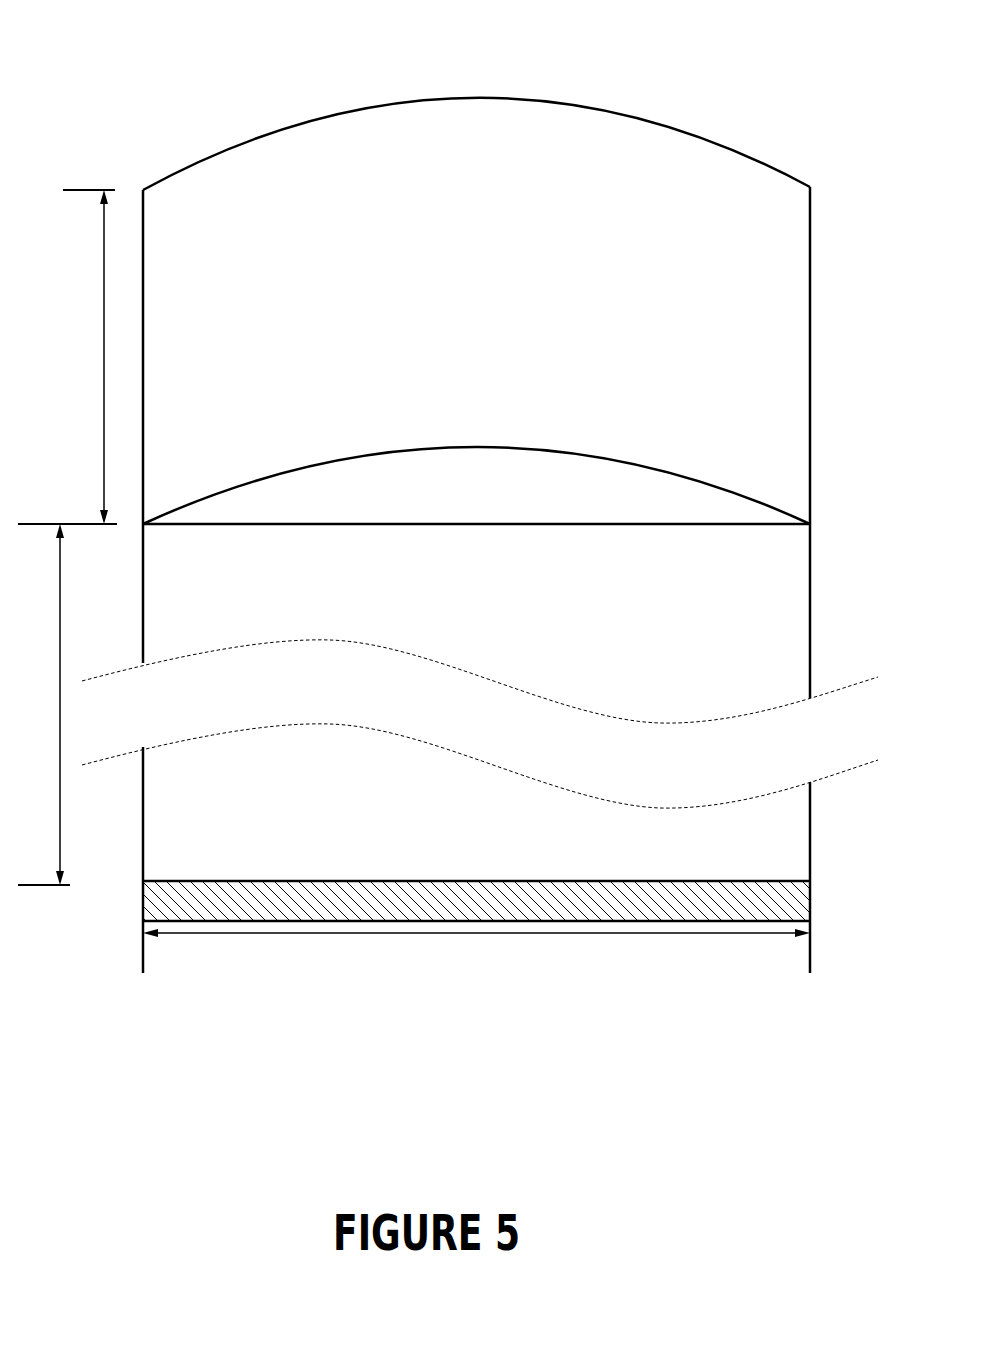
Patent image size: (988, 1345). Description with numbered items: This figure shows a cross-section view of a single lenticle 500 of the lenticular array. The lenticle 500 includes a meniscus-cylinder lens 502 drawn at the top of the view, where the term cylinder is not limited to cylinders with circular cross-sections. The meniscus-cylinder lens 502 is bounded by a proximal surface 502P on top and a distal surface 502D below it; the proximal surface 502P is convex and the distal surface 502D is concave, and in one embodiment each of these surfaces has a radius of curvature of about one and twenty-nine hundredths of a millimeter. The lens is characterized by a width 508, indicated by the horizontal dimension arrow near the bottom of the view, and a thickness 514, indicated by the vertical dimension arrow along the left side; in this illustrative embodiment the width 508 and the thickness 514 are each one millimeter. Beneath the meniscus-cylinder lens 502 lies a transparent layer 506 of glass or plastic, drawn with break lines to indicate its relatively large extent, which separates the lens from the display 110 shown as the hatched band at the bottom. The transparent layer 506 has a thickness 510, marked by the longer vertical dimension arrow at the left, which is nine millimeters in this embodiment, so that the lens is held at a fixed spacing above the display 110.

The lenticle 500 is at (860, 130).
The meniscus-cylinder lens 502 is at (476, 262).
The proximal surface 502P is at (477, 97).
The distal surface 502D is at (477, 447).
The transparent layer 506 is at (711, 610).
The display 110 is at (810, 900).
The thickness 514 is at (88, 357).
The thickness 510 is at (67, 704).
The width 508 is at (476, 945).